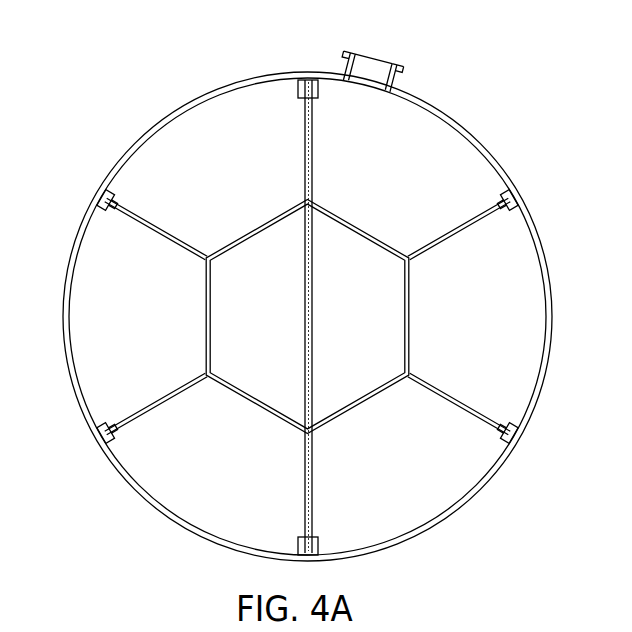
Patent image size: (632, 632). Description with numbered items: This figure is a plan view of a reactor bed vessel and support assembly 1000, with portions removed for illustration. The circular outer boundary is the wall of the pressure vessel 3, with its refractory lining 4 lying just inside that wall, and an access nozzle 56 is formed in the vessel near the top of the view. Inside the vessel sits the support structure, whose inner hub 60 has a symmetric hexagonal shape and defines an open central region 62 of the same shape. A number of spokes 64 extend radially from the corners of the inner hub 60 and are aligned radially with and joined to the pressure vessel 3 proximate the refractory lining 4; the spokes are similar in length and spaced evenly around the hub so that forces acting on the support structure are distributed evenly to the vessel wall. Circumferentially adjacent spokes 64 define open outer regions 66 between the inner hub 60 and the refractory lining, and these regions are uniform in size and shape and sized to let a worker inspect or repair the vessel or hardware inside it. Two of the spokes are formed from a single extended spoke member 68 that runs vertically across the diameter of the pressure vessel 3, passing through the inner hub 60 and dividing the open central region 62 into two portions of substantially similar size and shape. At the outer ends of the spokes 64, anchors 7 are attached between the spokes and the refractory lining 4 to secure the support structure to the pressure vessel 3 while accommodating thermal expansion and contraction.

The reactor bed vessel and support assembly 1000 is at (156, 88).
The access nozzle 56 is at (372, 60).
The pressure vessel 3 is at (434, 110).
The refractory lining 4 is at (522, 230).
The anchor 7 is at (502, 196).
The inner hub 60 is at (256, 230).
The open central region 62 is at (388, 312).
The spoke 64 is at (455, 228).
The open outer region 66 is at (84, 296).
The extended spoke member 68 is at (304, 312).